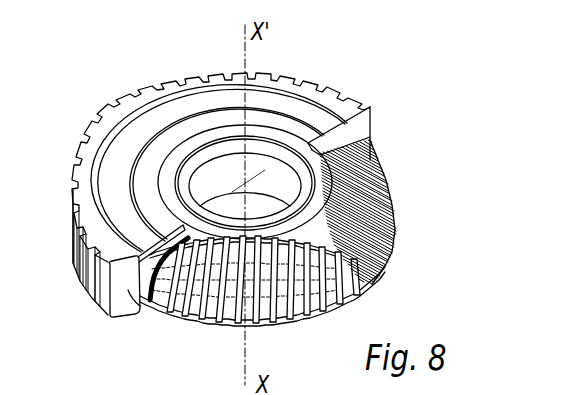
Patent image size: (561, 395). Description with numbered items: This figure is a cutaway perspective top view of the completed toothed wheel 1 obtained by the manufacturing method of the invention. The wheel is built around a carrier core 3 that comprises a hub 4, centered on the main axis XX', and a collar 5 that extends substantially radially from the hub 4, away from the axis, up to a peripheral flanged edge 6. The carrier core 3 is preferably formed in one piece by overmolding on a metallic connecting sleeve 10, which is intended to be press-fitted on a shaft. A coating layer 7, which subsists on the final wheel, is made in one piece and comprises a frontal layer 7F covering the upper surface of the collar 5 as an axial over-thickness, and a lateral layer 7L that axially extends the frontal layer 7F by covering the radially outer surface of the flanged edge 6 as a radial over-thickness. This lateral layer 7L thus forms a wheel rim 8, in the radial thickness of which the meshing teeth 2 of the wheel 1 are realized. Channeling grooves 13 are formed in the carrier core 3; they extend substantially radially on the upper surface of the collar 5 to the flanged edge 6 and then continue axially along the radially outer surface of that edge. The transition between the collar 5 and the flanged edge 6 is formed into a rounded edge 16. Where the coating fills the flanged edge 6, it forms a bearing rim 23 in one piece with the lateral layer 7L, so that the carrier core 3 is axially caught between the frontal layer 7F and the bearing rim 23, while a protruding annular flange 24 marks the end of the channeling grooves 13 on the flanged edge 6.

The toothed wheel 1 is at (328, 54).
The meshing teeth 2 is at (81, 277).
The carrier core 3 is at (392, 204).
The hub 4 is at (287, 145).
The collar 5 is at (340, 128).
The flanged edge 6 is at (362, 144).
The coating layer 7 is at (119, 188).
The frontal layer 7F is at (183, 226).
The lateral layer 7L is at (150, 281).
The wheel rim 8 is at (355, 134).
The metallic connecting sleeve 10 is at (222, 145).
The channeling grooves 13 is at (212, 290).
The rounded edge 16 is at (166, 281).
The bearing rim 23 is at (140, 308).
The protruding annular flange 24 is at (282, 323).